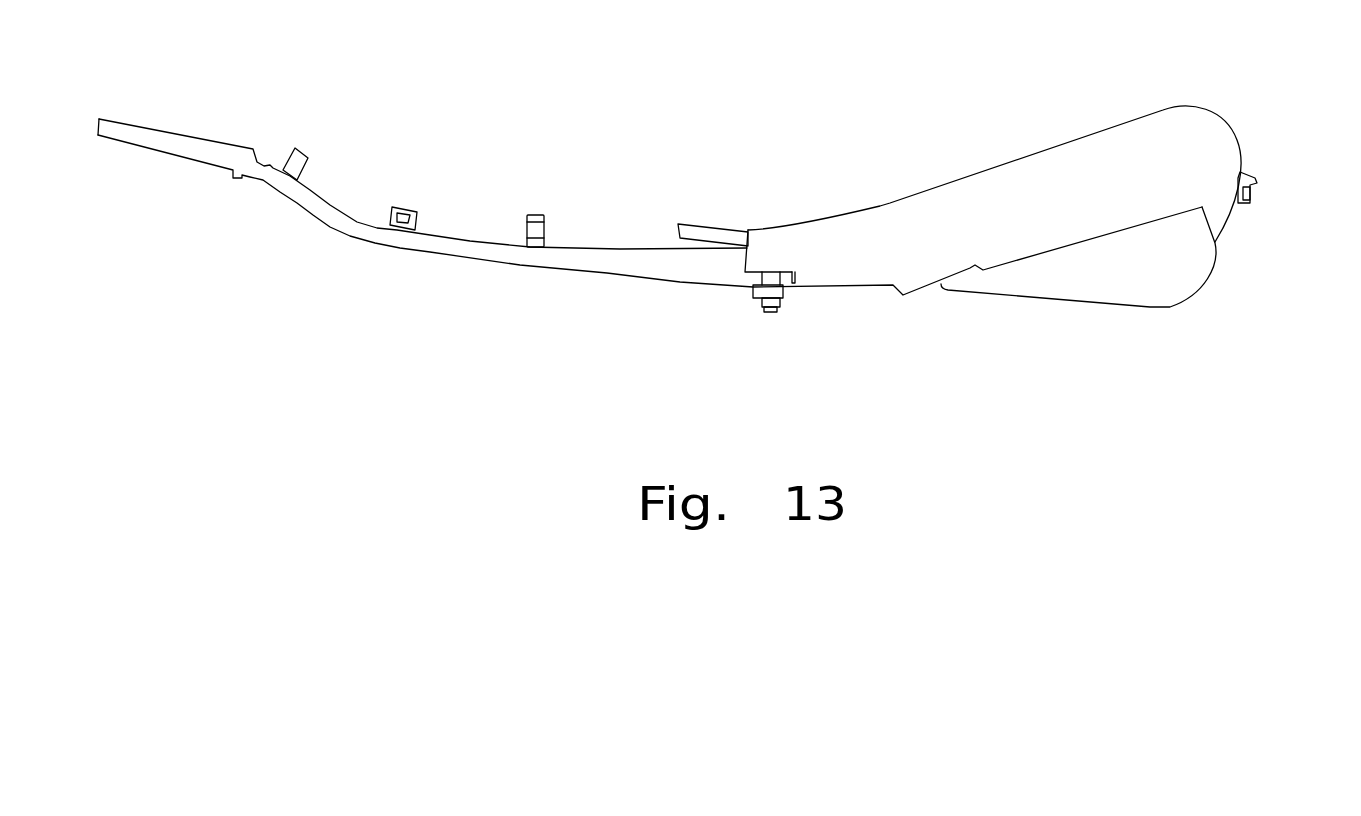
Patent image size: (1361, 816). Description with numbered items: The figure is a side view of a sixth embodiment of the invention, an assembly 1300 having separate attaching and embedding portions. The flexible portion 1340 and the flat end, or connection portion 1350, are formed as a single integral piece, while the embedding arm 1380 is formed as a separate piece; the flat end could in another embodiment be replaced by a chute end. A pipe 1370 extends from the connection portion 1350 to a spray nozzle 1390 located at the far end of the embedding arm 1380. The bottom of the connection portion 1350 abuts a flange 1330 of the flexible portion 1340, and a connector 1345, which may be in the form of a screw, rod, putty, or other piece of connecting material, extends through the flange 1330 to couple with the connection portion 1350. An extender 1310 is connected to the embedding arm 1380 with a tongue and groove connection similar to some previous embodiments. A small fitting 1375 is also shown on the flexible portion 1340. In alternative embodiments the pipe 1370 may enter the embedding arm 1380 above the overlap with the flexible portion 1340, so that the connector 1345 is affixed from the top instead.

The headrest assembly 1300 is at (884, 137).
The extender 1310 is at (1142, 290).
The flange 1330 is at (788, 287).
The flexible portion 1340 is at (610, 273).
The connector 1345 is at (757, 310).
The connection portion 1350 is at (208, 152).
The pipe 1370 is at (698, 225).
The stud 1375 is at (535, 213).
The embedding arm 1380 is at (1058, 158).
The spray nozzle 1390 is at (1257, 182).